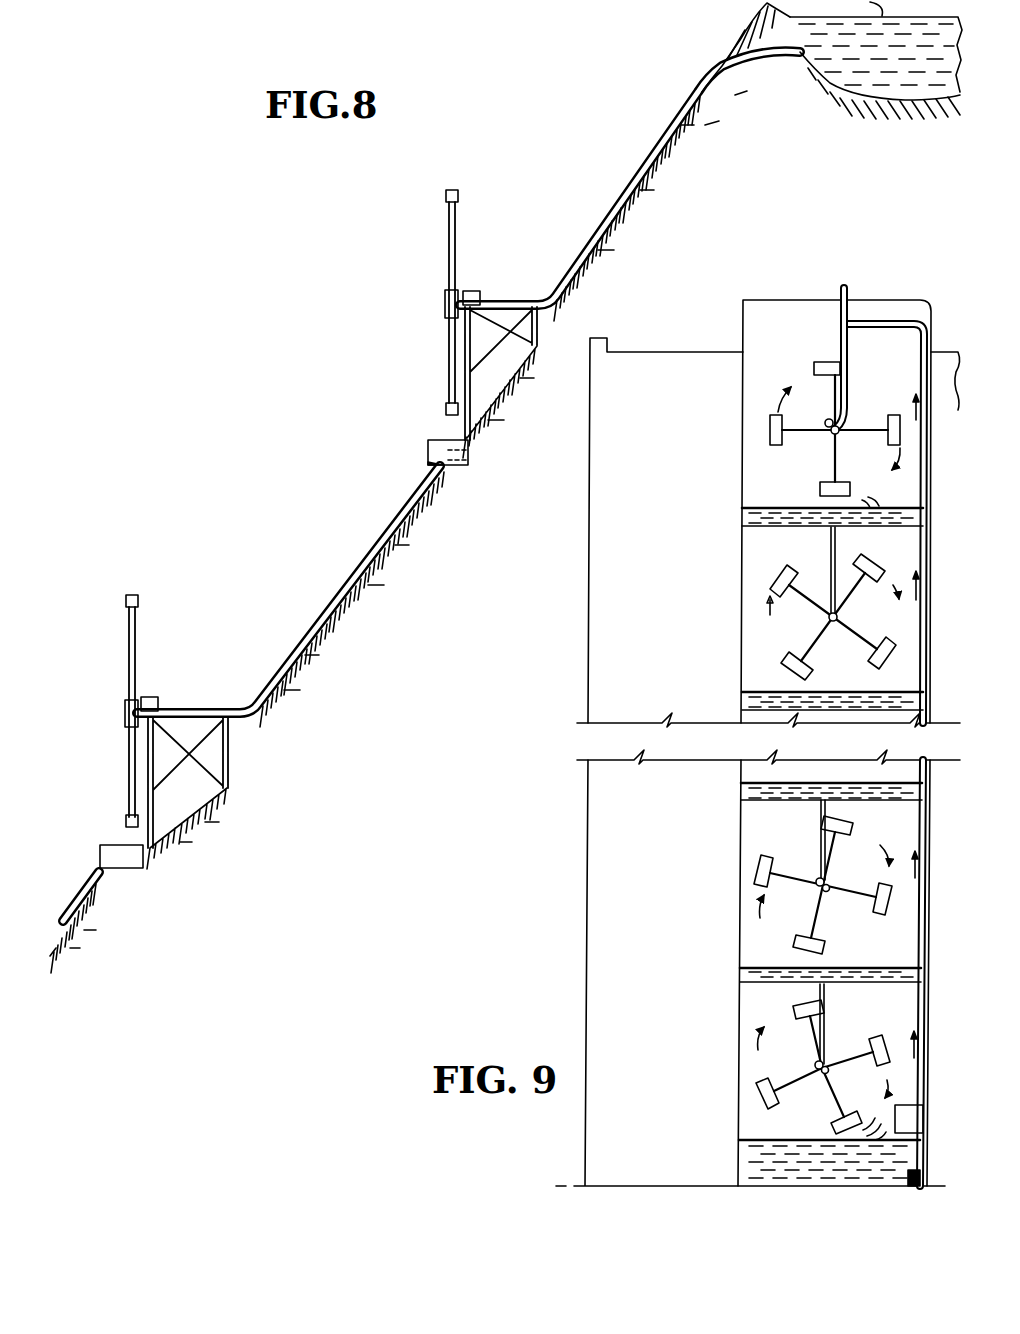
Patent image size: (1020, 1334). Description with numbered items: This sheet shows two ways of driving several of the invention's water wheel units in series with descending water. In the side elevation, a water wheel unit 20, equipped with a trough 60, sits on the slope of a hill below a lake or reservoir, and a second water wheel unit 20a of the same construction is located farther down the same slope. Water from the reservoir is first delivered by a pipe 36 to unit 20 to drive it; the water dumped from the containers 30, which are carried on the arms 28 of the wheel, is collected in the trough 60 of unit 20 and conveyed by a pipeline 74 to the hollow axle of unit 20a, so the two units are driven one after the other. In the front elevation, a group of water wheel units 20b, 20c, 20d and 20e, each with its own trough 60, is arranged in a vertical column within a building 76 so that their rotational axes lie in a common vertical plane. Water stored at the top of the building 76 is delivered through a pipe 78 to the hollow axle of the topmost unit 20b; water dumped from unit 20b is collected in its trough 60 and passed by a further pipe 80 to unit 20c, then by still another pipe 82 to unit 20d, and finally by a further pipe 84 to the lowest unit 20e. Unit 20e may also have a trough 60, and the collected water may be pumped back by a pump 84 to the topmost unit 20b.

In FIG. 8, the water wheel unit 20 is at (484, 224).
In FIG. 8, the second water wheel unit 20a is at (157, 632).
In FIG. 9, the topmost water wheel unit 20b is at (855, 385).
In FIG. 9, the water wheel unit 20c is at (848, 626).
In FIG. 9, the water wheel unit 20d is at (851, 861).
In FIG. 9, the lowest water wheel unit 20e is at (841, 1027).
In FIG. 8, the arm 28 is at (449, 250).
In FIG. 9, the arm 28 is at (835, 447).
In FIG. 8, the container 30 is at (458, 196).
In FIG. 9, the container 30 is at (814, 362).
In FIG. 8, the pipe 36 is at (530, 282).
In FIG. 8, the trough 60 is at (428, 450).
In FIG. 9, the trough 60 is at (755, 516).
In FIG. 8, the pipeline 74 is at (341, 588).
In FIG. 9, the building 76 is at (743, 320).
In FIG. 9, the pipe 78 is at (848, 362).
In FIG. 9, the pipe 80 is at (831, 541).
In FIG. 9, the pipe 82 is at (824, 836).
In FIG. 9, the pipe 84 is at (826, 1002).